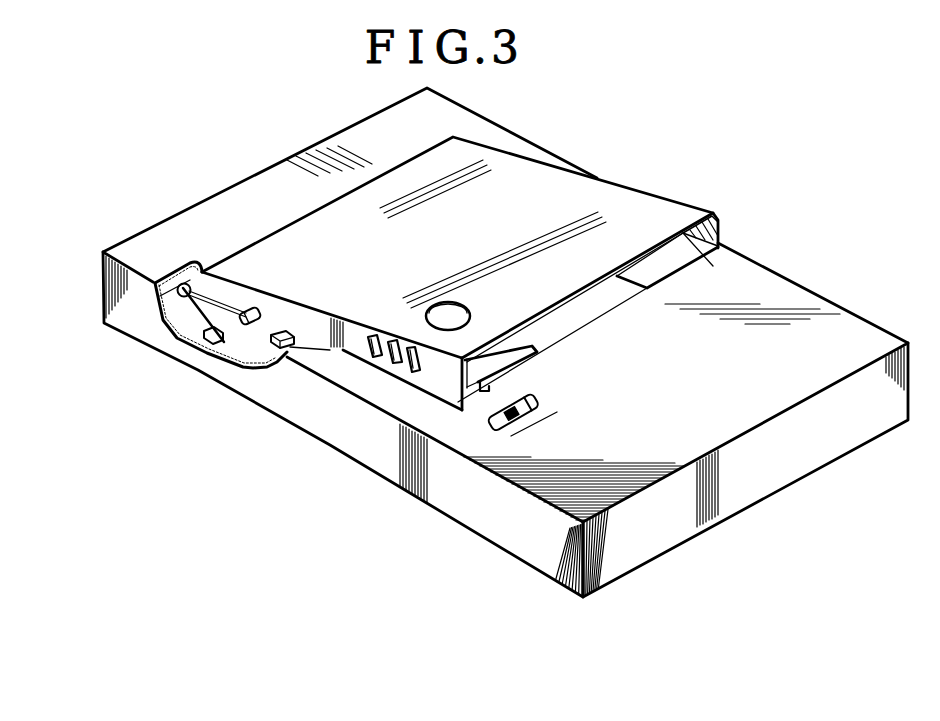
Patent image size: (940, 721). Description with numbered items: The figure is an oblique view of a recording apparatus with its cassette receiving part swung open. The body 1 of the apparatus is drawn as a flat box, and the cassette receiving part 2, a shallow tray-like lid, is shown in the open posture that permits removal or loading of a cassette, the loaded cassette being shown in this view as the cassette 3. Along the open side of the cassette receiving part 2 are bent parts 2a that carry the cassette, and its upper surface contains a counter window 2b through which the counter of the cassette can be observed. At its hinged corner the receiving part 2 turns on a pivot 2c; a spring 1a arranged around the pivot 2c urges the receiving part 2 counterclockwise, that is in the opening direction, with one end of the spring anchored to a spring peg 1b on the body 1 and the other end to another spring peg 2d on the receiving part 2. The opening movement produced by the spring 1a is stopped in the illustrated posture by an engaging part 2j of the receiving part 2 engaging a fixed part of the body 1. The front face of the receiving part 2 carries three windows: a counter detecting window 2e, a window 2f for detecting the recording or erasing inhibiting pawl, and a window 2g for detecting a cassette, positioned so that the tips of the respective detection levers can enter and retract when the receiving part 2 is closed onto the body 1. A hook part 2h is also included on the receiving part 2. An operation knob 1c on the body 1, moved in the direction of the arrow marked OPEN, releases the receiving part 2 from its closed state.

The body of the recording apparatus 1 is at (843, 323).
The spring 1a is at (170, 293).
The spring peg 1b is at (193, 313).
The operation knob 1c is at (500, 430).
The cassette receiving part 2 is at (673, 212).
The bent parts 2a is at (535, 351).
The counter window 2b is at (470, 303).
The pivot 2c is at (153, 288).
The spring peg 2d is at (243, 317).
The counter detecting window 2e is at (412, 372).
The window for detecting the recording or erasing inhibiting pawl 2f is at (393, 363).
The window for detecting a cassette 2g is at (373, 358).
The hook part 2h is at (481, 386).
The engaging part 2j is at (277, 343).
The tape cassette 3 is at (597, 318).